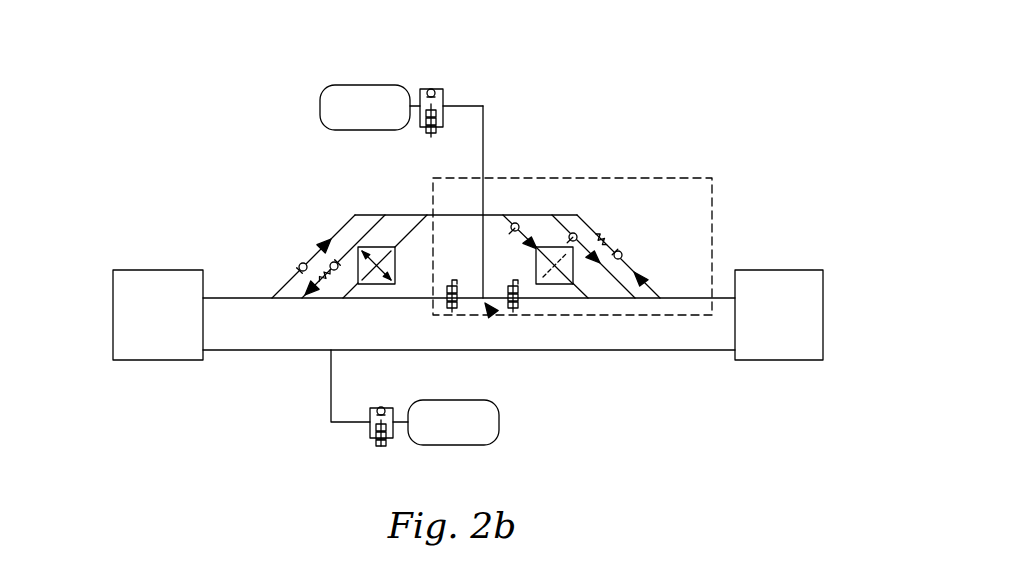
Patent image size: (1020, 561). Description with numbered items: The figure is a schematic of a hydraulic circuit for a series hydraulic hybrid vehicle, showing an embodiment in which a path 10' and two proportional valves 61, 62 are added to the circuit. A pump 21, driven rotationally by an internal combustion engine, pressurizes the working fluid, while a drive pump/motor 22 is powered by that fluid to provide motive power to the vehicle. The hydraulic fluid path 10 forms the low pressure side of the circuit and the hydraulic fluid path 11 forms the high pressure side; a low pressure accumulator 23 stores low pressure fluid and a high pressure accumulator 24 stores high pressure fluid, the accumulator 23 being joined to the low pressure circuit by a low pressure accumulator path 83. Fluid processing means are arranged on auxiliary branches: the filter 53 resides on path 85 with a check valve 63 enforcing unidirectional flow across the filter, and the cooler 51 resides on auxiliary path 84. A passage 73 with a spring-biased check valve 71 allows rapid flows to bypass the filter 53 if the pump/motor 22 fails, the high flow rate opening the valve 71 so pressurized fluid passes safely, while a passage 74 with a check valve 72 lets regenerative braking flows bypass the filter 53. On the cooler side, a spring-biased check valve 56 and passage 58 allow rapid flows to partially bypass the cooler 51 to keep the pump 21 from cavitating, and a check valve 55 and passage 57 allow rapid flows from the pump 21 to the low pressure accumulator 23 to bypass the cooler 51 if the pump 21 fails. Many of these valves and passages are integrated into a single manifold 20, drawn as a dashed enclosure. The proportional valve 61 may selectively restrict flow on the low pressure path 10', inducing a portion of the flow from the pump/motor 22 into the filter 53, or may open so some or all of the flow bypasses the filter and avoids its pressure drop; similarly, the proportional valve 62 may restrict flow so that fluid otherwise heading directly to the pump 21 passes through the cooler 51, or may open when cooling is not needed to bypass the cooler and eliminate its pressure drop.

The hydraulic fluid path 10 is at (443, 253).
The low pressure path 10' is at (522, 346).
The hydraulic fluid path 11 is at (258, 350).
The manifold 20 is at (705, 178).
The pump 21 is at (113, 312).
The drive pump/motor 22 is at (823, 305).
The low pressure accumulator 23 is at (320, 106).
The high pressure accumulator 24 is at (499, 422).
The cooler 51 is at (375, 246).
The filter 53 is at (546, 245).
The check valve 55 is at (300, 264).
The spring-biased check valve 56 is at (330, 262).
The passage 57 is at (316, 275).
The passage 58 is at (328, 240).
The proportional valve 61 is at (518, 303).
The proportional valve 62 is at (458, 303).
The check valve 63 is at (513, 222).
The spring-biased check valve 71 is at (626, 246).
The check valve 72 is at (575, 232).
The passage 73 is at (599, 223).
The passage 74 is at (563, 227).
The low pressure accumulator path 83 is at (483, 190).
The auxiliary path 84 is at (402, 242).
The path 85 is at (578, 288).